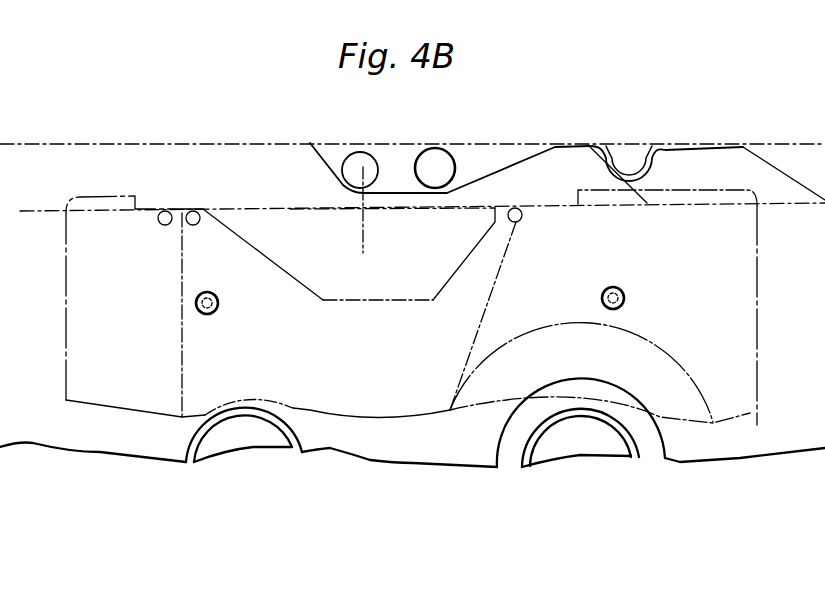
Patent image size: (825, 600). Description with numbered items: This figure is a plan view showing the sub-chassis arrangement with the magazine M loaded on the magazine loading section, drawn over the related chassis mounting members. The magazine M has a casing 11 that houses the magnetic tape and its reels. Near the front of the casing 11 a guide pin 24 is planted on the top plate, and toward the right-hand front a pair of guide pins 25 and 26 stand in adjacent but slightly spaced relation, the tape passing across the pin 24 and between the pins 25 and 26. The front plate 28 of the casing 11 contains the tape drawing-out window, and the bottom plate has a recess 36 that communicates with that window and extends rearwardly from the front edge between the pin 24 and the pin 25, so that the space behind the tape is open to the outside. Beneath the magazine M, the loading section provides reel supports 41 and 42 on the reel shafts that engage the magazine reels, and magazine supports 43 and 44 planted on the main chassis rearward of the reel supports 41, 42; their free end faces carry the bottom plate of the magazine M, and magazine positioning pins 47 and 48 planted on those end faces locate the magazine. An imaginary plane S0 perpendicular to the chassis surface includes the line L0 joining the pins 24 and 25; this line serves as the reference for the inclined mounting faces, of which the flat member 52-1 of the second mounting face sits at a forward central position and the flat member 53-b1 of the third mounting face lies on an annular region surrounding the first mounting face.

The casing 11 is at (68, 255).
The guide pin 24 is at (516, 222).
The guide pin 25 is at (193, 226).
The guide pin 26 is at (165, 226).
The front plate 28 is at (713, 188).
The recess 36 is at (377, 296).
The reel support 41 is at (622, 443).
The reel support 42 is at (287, 445).
The magazine support 43 is at (618, 307).
The magazine support 44 is at (212, 312).
The magazine positioning pin 47 is at (624, 298).
The magazine positioning pin 48 is at (218, 303).
The flat member 52-1 is at (345, 179).
The flat member 53-b1 is at (452, 178).
The line L0 is at (33, 210).
The imaginary plane S0 is at (294, 201).
The magazine M is at (757, 320).